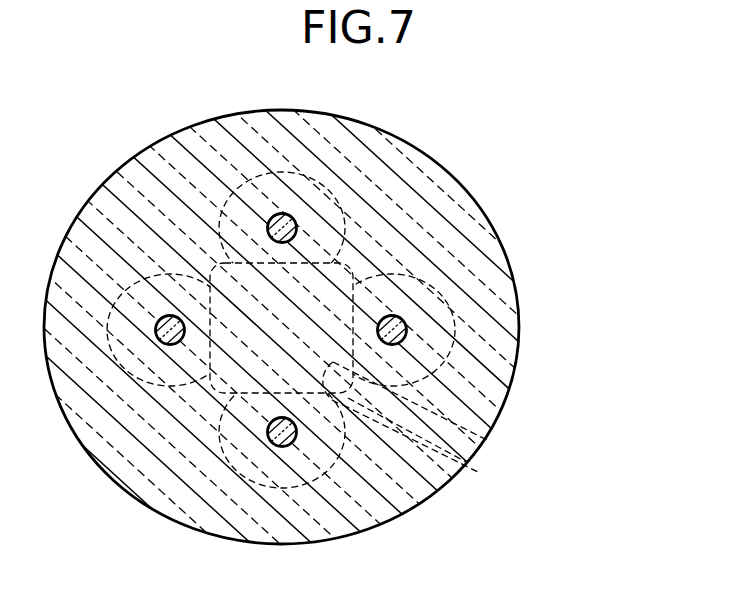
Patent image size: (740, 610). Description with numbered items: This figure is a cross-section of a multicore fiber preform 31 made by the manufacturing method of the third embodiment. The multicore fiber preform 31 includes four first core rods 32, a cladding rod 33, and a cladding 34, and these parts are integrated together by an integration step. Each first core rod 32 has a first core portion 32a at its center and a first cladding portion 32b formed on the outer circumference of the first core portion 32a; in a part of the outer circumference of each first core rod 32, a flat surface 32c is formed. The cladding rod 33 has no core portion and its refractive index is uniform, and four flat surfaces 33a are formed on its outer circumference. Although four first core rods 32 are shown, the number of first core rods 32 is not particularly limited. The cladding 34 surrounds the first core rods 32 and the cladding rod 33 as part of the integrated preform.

The multicore fiber preform 31 is at (350, 305).
The first core rod 32 is at (391, 330).
The first core portion 32a is at (396, 316).
The first cladding portion 32b is at (452, 312).
The flat surface 32c is at (353, 352).
The cladding rod 33 is at (487, 440).
The flat surface 33a is at (466, 462).
The cladding 34 is at (491, 229).